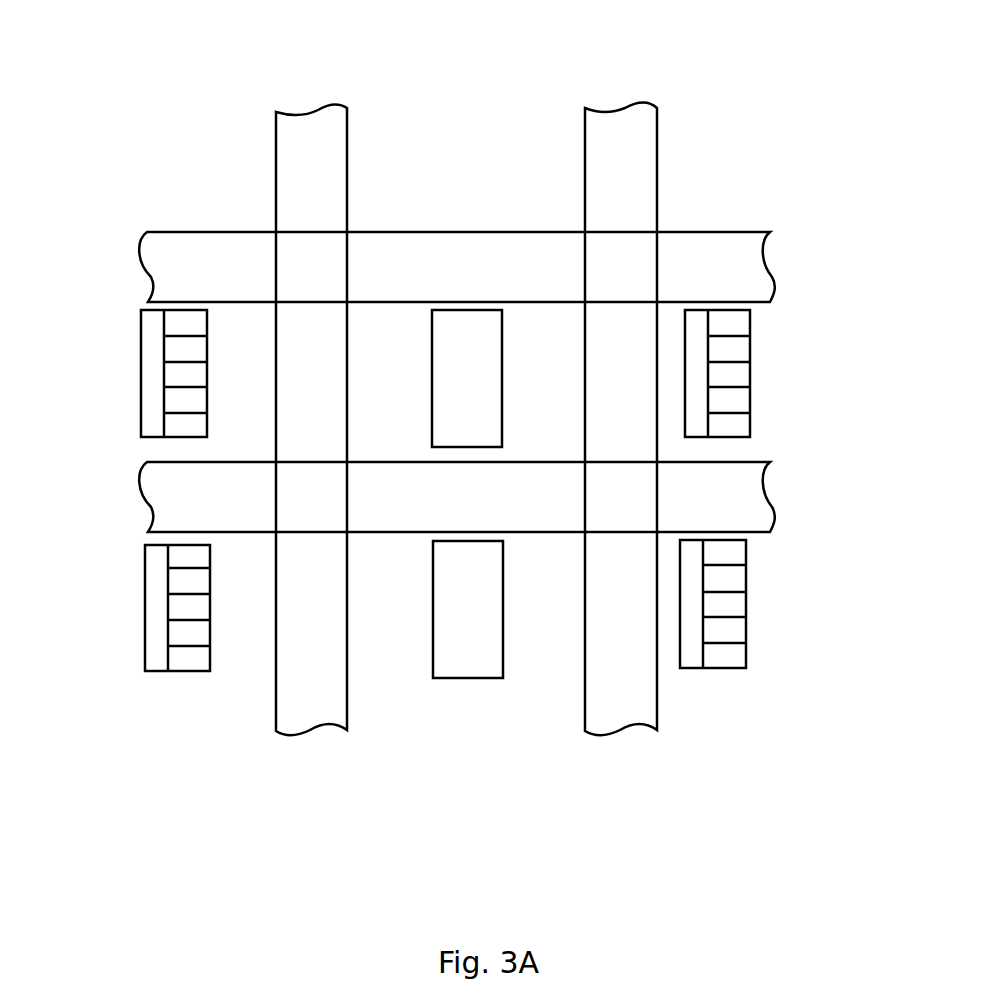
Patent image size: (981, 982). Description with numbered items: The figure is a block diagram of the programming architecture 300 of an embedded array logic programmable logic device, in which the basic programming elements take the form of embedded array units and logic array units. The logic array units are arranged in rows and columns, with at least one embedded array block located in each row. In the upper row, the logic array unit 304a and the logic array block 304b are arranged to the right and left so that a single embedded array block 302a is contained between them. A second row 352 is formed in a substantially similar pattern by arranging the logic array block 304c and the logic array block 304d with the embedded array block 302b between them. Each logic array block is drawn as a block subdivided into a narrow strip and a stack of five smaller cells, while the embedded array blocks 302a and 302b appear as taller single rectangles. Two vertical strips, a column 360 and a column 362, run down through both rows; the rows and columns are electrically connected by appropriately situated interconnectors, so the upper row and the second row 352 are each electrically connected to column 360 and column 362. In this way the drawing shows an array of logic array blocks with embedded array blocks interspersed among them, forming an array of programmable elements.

The programming architecture 300 is at (163, 88).
The embedded array block 302a is at (467, 378).
The embedded array block 302b is at (468, 609).
The logic array unit 304a is at (782, 367).
The logic array block 304b is at (106, 379).
The logic array block 304c is at (797, 603).
The logic array block 304d is at (111, 625).
The second row 352 is at (802, 493).
The column 360 is at (308, 130).
The column 362 is at (615, 125).